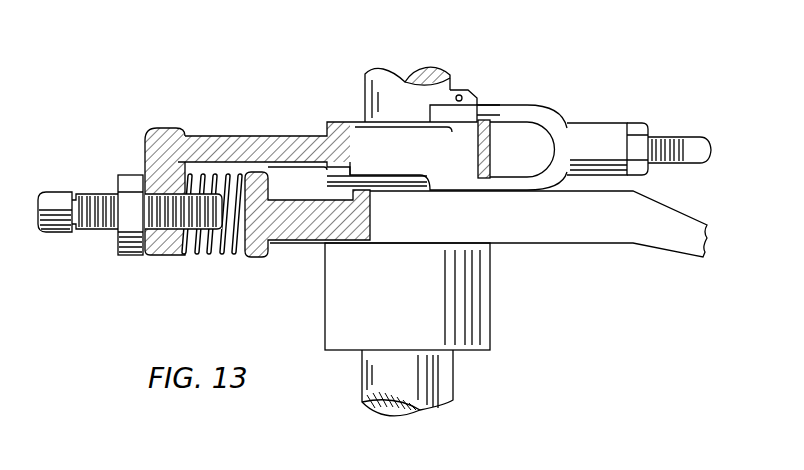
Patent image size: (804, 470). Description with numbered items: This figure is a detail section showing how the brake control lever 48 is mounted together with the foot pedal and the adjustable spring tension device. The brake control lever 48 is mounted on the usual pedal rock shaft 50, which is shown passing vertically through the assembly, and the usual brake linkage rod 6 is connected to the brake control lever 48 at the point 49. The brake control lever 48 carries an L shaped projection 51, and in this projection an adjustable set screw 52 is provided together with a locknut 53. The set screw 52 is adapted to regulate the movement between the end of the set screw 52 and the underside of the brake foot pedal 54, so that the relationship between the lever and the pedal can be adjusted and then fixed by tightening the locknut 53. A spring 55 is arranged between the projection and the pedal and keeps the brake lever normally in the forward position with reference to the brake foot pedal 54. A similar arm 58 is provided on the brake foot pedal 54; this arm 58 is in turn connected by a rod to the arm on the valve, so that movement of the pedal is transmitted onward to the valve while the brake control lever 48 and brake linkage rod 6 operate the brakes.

The brake control rod 6 is at (678, 142).
The brake control lever 48 is at (233, 142).
The point 49 is at (473, 95).
The pedal rock shaft 50 is at (372, 97).
The L shaped projection 51 is at (153, 173).
The adjustable set screw 52 is at (93, 231).
The locknut 53 is at (133, 247).
The brake foot pedal 54 is at (294, 230).
The spring 55 is at (210, 250).
The arm 58 is at (625, 228).